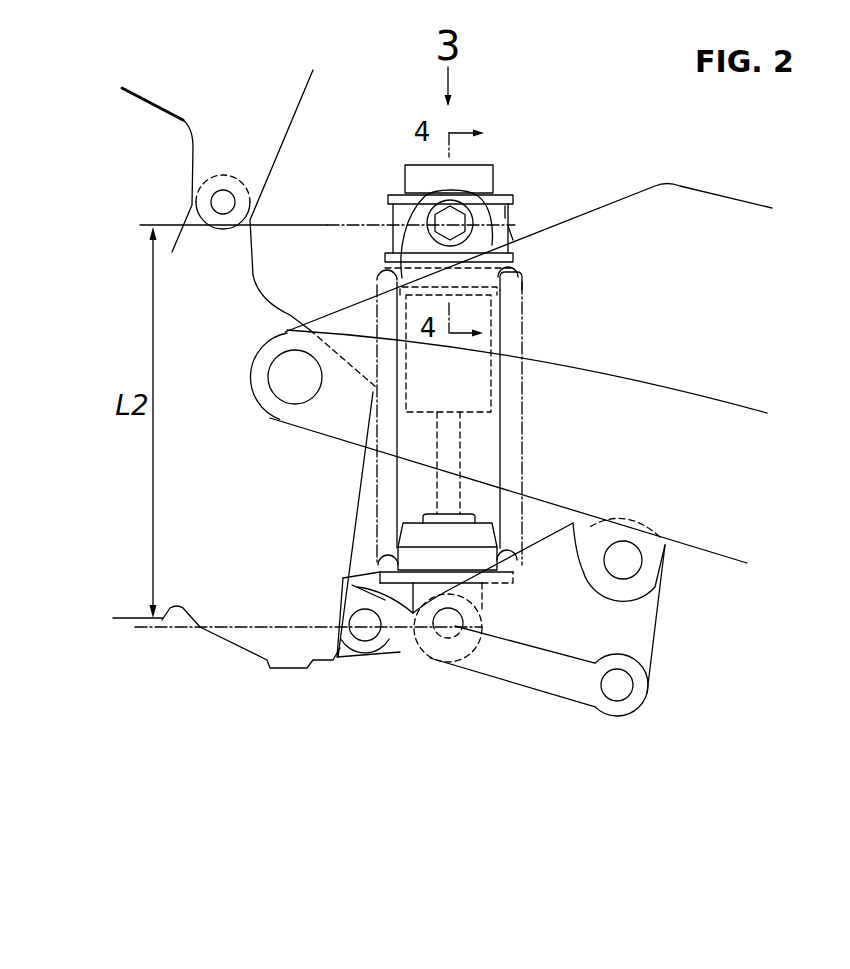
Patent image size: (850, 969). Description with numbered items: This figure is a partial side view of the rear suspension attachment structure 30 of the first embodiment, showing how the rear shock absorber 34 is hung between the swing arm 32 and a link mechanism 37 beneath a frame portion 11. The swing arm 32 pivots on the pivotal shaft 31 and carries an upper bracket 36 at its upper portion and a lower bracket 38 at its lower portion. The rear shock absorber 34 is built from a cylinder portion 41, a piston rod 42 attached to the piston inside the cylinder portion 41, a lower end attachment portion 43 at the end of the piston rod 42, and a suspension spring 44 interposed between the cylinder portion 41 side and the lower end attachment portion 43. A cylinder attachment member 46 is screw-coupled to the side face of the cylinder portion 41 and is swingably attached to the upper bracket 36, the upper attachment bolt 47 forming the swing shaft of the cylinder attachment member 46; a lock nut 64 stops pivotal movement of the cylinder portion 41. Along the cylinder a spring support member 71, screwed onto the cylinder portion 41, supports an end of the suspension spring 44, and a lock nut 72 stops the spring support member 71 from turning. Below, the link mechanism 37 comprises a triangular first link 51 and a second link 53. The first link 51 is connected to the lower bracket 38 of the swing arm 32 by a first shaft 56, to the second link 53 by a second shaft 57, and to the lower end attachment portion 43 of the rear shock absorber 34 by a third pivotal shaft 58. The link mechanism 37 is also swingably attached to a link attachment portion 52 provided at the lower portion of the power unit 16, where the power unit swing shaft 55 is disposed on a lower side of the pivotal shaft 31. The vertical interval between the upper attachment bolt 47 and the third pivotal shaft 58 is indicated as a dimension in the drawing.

The vehicle body frame bracket 11 is at (150, 104).
The power unit 16 is at (220, 649).
The rear suspension 30 is at (224, 106).
The pivotal shaft 31 is at (268, 383).
The swing arm 32 is at (723, 193).
The rear shock absorber 34 is at (388, 164).
The upper bracket 36 is at (450, 192).
The link mechanism 37 is at (684, 618).
The lower bracket 38 is at (650, 598).
The cylinder portion 41 is at (493, 343).
The piston rod 42 is at (460, 450).
The lower end attachment portion 43 is at (477, 537).
The suspension spring 44 is at (380, 568).
The cylinder attachment member 46 is at (393, 217).
The upper attachment bolt 47 is at (512, 233).
The first link 51 is at (655, 643).
The link attachment portion 52 is at (345, 650).
The second link 53 is at (477, 673).
The swing shaft 55 is at (390, 650).
The first shaft 56 is at (657, 545).
The second shaft 57 is at (633, 687).
The third pivotal shaft 58 is at (433, 640).
The lock nut 64 is at (510, 213).
The spring support member 71 is at (380, 277).
The lock nut 72 is at (385, 258).